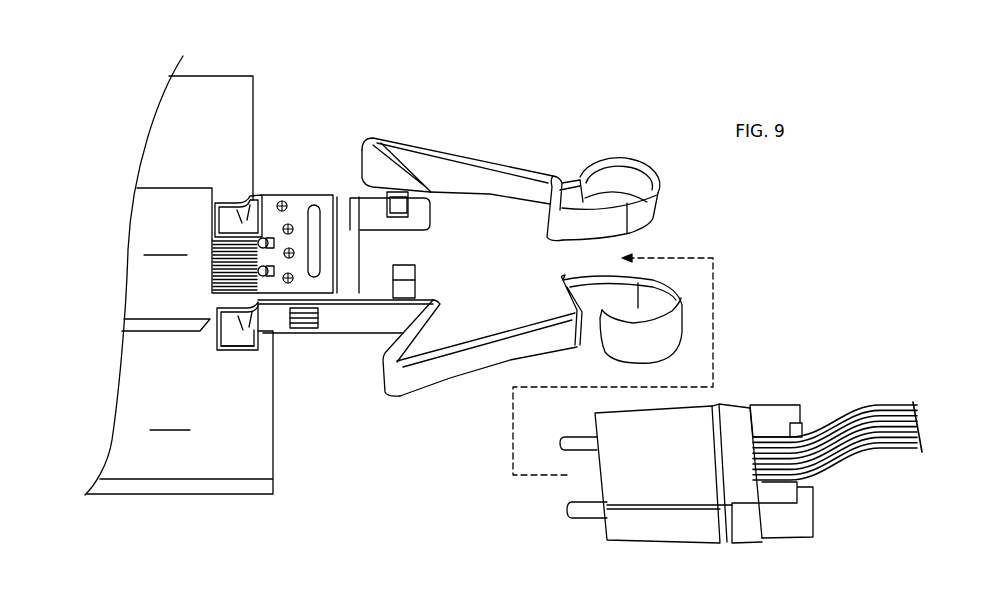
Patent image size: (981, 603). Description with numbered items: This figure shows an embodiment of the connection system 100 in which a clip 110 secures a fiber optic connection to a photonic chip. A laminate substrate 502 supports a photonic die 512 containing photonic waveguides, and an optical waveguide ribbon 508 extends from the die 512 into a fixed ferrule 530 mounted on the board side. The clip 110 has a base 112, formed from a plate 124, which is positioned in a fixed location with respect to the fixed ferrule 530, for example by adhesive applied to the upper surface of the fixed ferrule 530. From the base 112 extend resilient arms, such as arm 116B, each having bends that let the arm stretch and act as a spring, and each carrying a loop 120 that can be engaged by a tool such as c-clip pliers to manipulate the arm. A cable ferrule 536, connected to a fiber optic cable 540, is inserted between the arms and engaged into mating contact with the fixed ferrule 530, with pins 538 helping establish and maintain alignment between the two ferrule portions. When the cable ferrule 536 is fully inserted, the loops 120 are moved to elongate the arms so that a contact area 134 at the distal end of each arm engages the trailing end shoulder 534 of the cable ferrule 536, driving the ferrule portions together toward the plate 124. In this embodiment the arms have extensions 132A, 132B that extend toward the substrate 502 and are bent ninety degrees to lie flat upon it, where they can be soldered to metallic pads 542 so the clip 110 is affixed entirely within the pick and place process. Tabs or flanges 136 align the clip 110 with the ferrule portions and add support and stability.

The connection system 100 is at (470, 242).
The clip 110 is at (425, 130).
The base 112 is at (322, 184).
The resilient arm 116B is at (452, 380).
The loop 120 is at (628, 151).
The plate 124 is at (300, 203).
The extension 132A is at (248, 190).
The extension 132B is at (271, 332).
The contact area 134 is at (548, 197).
The tabs or flanges 136 is at (412, 207).
The laminate substrate 502 is at (179, 275).
The optical waveguide ribbon 508 is at (223, 268).
The photonic die 512 is at (165, 244).
The fixed ferrule 530 is at (347, 220).
The trailing end shoulder 534 is at (810, 412).
The cable ferrule 536 is at (739, 391).
The pins 538 is at (577, 505).
The fiber optic cable 540 is at (888, 404).
The metallic pads 542 is at (229, 359).